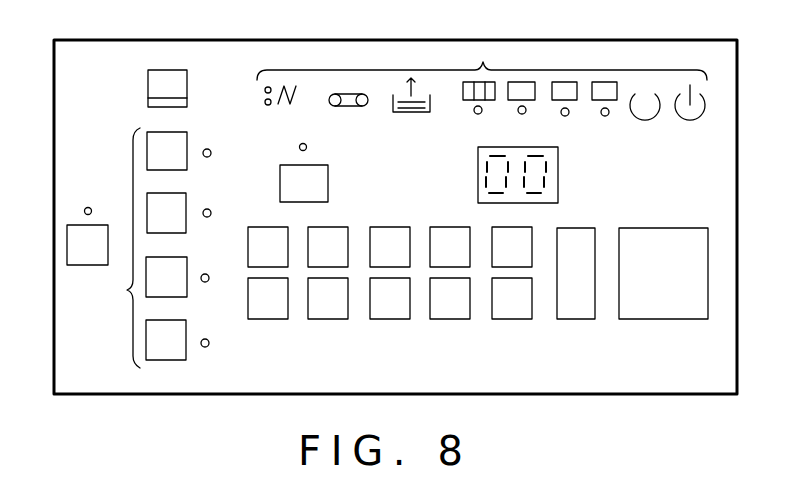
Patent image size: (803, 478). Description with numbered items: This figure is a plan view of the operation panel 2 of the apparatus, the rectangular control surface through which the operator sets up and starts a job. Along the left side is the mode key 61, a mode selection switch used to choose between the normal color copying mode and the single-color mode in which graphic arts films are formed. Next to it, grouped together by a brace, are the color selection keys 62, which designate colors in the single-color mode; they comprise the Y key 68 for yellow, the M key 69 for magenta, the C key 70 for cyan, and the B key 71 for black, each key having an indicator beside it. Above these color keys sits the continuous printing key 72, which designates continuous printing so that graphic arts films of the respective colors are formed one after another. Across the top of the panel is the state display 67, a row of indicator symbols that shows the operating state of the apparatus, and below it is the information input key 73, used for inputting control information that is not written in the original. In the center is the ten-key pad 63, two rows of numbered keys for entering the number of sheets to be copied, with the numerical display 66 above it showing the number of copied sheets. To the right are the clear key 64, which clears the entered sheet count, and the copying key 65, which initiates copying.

The operation panel 2 is at (226, 45).
The mode key 61 is at (80, 265).
The color selection keys 62 is at (117, 248).
The ten-key pad 63 is at (545, 335).
The clear key 64 is at (585, 319).
The copying key 65 is at (690, 319).
The numerical display 66 is at (558, 173).
The state display 67 is at (478, 84).
The Y key 68 is at (187, 142).
The M key 69 is at (186, 203).
The C key 70 is at (187, 267).
The B key 71 is at (186, 330).
The continuous printing key 72 is at (148, 89).
The information input key 73 is at (328, 171).